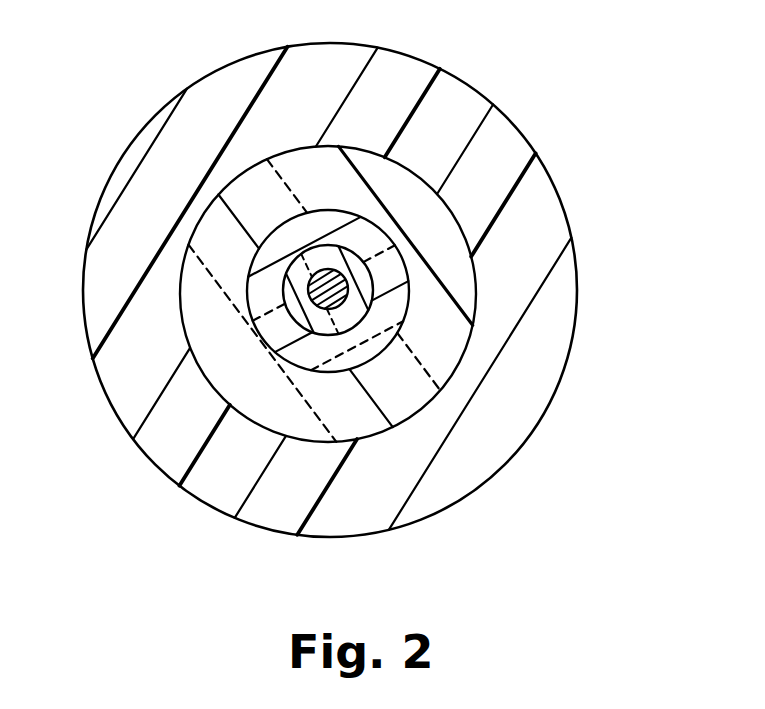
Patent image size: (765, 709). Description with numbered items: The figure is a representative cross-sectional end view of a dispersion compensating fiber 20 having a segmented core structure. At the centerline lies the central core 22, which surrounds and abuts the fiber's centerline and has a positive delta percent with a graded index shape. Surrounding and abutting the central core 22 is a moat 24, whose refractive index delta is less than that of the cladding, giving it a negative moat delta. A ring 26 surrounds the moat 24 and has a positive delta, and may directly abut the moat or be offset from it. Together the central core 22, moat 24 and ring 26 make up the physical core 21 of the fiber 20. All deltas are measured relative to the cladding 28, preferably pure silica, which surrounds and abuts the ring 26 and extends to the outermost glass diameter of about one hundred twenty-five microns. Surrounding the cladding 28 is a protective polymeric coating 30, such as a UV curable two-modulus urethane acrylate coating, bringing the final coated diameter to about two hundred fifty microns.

The dispersion compensating fiber 20 is at (503, 108).
The physical core 21 is at (250, 347).
The central core 22 is at (343, 307).
The moat 24 is at (340, 352).
The ring 26 is at (390, 273).
The cladding 28 is at (477, 268).
The polymeric coating 30 is at (477, 460).